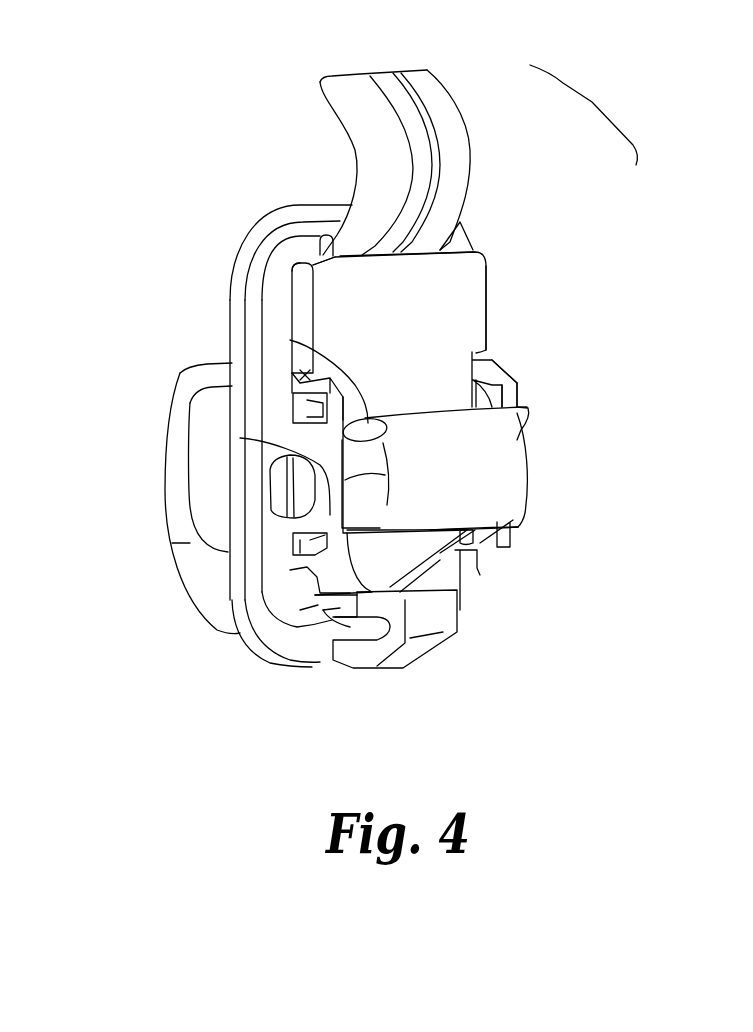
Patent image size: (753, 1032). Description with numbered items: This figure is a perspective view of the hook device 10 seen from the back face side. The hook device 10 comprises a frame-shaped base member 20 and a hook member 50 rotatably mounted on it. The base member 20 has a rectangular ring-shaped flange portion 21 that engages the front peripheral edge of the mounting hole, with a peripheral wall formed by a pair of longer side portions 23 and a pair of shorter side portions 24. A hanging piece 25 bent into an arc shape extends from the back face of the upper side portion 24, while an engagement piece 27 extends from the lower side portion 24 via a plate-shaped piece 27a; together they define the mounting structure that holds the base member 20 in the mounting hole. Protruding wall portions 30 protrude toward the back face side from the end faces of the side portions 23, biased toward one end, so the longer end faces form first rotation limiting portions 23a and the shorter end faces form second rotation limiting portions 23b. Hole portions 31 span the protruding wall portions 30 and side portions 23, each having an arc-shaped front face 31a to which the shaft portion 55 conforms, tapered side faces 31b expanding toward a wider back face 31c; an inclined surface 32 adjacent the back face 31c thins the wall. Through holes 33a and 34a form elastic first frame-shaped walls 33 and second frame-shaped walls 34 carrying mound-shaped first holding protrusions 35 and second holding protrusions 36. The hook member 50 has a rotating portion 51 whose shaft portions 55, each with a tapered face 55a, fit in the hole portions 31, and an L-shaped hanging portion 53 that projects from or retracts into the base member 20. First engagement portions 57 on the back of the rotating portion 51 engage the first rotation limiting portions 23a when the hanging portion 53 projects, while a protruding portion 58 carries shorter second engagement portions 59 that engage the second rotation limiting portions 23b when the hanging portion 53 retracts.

The hook device 10 is at (616, 92).
The base member 20 is at (472, 216).
The flange portion 21 is at (295, 218).
The side portions 23 is at (277, 307).
The first rotation limiting portions 23a is at (293, 295).
The second rotation limiting portions 23b is at (293, 593).
The side portions 24 is at (320, 247).
The hanging piece 25 is at (425, 82).
The engagement piece 27 is at (412, 655).
The plate-shaped piece 27a is at (327, 620).
The protruding wall portions 30 is at (537, 390).
The hole portions 31 is at (332, 528).
The front face 31a is at (273, 488).
The side faces 31b is at (238, 440).
The back face 31c is at (300, 418).
The inclined surface 32 is at (385, 480).
The first frame-shaped walls 33 is at (500, 378).
The through holes 33a is at (528, 384).
The second frame-shaped walls 34 is at (507, 533).
The through holes 34a is at (473, 543).
The first holding protrusions 35 is at (480, 360).
The second holding protrusions 36 is at (487, 547).
The hook member 50 is at (497, 277).
The rotating portion 51 is at (420, 300).
The hanging portion 53 is at (170, 463).
The shaft portions 55 is at (290, 507).
The tapered face 55a is at (286, 500).
The first engagement portions 57 is at (486, 291).
The protruding portion 58 is at (515, 471).
The second engagement portions 59 is at (520, 412).